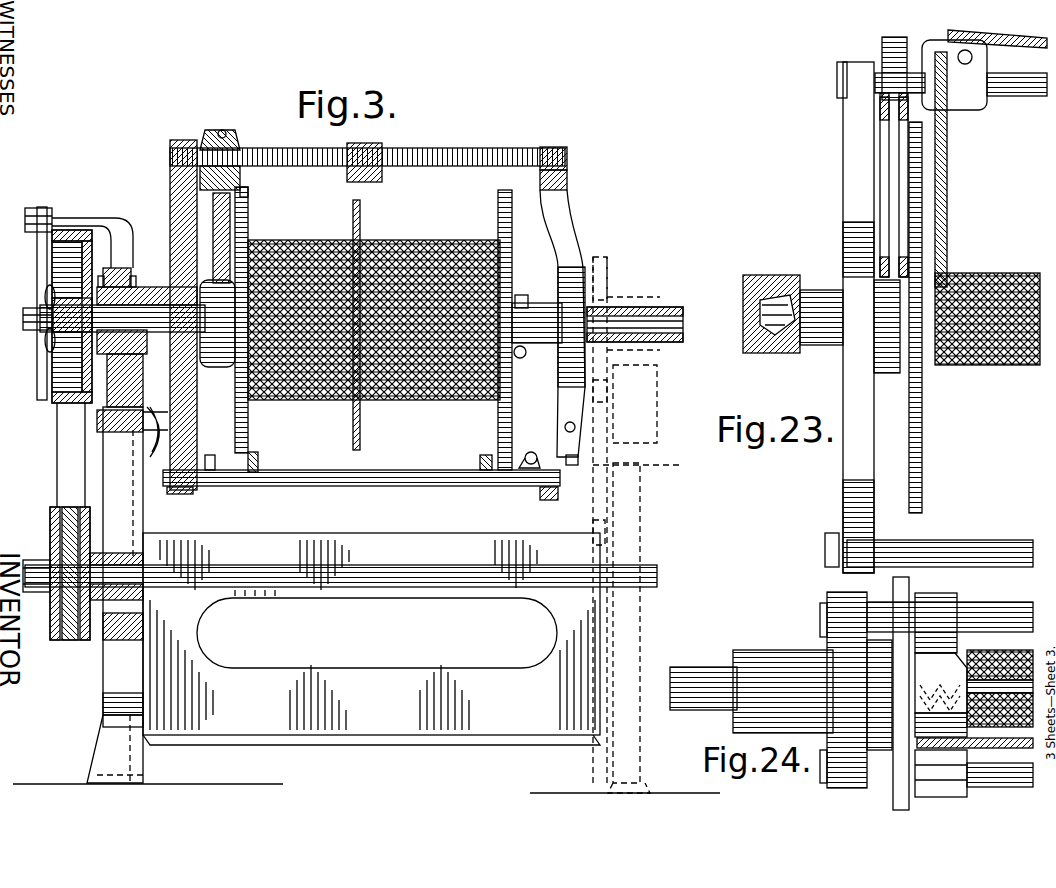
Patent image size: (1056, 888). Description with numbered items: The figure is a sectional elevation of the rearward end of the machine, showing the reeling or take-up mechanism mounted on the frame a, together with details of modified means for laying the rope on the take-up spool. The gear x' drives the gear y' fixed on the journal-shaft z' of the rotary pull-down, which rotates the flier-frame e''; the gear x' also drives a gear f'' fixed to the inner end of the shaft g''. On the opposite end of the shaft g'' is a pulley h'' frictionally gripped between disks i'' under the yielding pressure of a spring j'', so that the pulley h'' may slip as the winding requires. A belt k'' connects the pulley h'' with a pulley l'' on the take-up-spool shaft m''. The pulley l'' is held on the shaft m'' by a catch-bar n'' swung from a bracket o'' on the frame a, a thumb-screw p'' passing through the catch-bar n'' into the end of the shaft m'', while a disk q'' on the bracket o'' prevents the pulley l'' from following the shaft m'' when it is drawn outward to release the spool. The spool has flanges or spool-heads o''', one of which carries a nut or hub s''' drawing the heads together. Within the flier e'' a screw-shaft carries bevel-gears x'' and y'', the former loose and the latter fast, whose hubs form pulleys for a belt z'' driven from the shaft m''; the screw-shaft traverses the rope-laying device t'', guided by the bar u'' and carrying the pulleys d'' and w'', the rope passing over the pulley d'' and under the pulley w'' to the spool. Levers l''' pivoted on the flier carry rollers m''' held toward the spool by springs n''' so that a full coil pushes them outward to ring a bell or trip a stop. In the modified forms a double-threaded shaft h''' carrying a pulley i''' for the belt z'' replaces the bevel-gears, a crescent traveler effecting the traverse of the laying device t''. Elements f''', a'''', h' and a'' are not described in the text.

In FIG. 3, the nut or hub s''' is at (367, 148).
In FIG. 3, the belt z'' is at (349, 178).
In FIG. 3, the flier-frame e'' is at (367, 312).
In FIG. 23, the flier-frame e'' is at (849, 317).
In FIG. 3, the bevel-gear x'' is at (217, 149).
In FIG. 3, the bevel-gear y'' is at (243, 123).
In FIG. 3, the stop f''' is at (260, 185).
In FIG. 3, the flanges or spool-heads o''' is at (264, 320).
In FIG. 23, the flanges or spool-heads o''' is at (928, 317).
In FIG. 3, the journal-shaft z' is at (442, 267).
In FIG. 3, the collar a'''' is at (216, 334).
In FIG. 3, the gear y' is at (619, 278).
In FIG. 3, the gear x' is at (612, 400).
In FIG. 3, the gear f'' is at (583, 522).
In FIG. 3, the levers l''' is at (372, 448).
In FIG. 3, the rollers m''' is at (370, 452).
In FIG. 3, the pawl h' is at (577, 450).
In FIG. 3, the shaft g'' is at (357, 580).
In FIG. 3, the disk q'' is at (34, 207).
In FIG. 3, the catch-bar n'' is at (29, 303).
In FIG. 3, the bracket o'' is at (92, 243).
In FIG. 3, the take-up-spool shaft m'' is at (147, 326).
In FIG. 23, the take-up-spool shaft m'' is at (793, 297).
In FIG. 3, the thumb-screw p'' is at (26, 319).
In FIG. 3, the pulley l'' is at (56, 316).
In FIG. 3, the double-threaded shaft h''' is at (157, 416).
In FIG. 3, the belt k'' is at (50, 455).
In FIG. 3, the springs n''' is at (134, 449).
In FIG. 3, the frame a is at (366, 600).
In FIG. 3, the pulley h'' is at (72, 572).
In FIG. 23, the pulley h'' is at (1017, 69).
In FIG. 3, the disks i'' is at (92, 573).
In FIG. 3, the spring j'' is at (36, 587).
In FIG. 23, the pulley i''' is at (887, 154).
In FIG. 23, the pulley d'' is at (984, 150).
In FIG. 24, the guide bar u'' is at (950, 619).
In FIG. 24, the rope-laying device t'' is at (917, 695).
In FIG. 24, the plate a'' is at (975, 774).
In FIG. 24, the pulley w'' is at (974, 783).